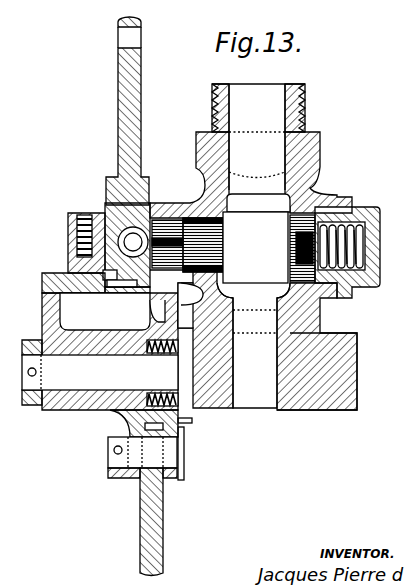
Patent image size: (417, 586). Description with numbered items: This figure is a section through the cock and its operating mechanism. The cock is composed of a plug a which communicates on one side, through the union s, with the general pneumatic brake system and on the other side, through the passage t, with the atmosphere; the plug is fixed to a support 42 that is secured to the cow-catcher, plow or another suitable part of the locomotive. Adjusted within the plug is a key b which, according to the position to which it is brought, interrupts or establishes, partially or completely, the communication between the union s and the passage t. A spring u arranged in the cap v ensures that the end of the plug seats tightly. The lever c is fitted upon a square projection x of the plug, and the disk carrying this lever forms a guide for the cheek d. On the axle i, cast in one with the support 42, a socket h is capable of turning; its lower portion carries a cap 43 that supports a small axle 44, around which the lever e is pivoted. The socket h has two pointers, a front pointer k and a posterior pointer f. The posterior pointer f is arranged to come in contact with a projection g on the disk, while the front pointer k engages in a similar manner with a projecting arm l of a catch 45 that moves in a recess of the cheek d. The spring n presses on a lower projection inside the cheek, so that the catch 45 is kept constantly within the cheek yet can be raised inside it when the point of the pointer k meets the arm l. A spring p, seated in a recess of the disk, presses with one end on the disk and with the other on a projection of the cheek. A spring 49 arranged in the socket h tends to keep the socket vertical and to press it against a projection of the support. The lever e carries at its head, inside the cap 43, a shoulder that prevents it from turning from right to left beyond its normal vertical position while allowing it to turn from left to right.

The lever c is at (123, 111).
The plug a is at (312, 189).
The union s is at (265, 96).
The passage t is at (268, 398).
The support 42 is at (358, 346).
The key b is at (203, 232).
The square projection x is at (168, 216).
The cap v is at (378, 251).
The spring u is at (366, 229).
The cheek d is at (75, 245).
The spring n is at (84, 216).
The spring p is at (103, 248).
The projecting arm l is at (43, 287).
The front pointer k is at (42, 324).
The catch 45 is at (105, 311).
The posterior pointer f is at (163, 318).
The projection g is at (190, 305).
The axle i is at (100, 372).
The spring 49 is at (159, 373).
The socket h is at (115, 416).
The cap 43 is at (192, 422).
The small axle 44 is at (165, 457).
The lever e is at (165, 512).